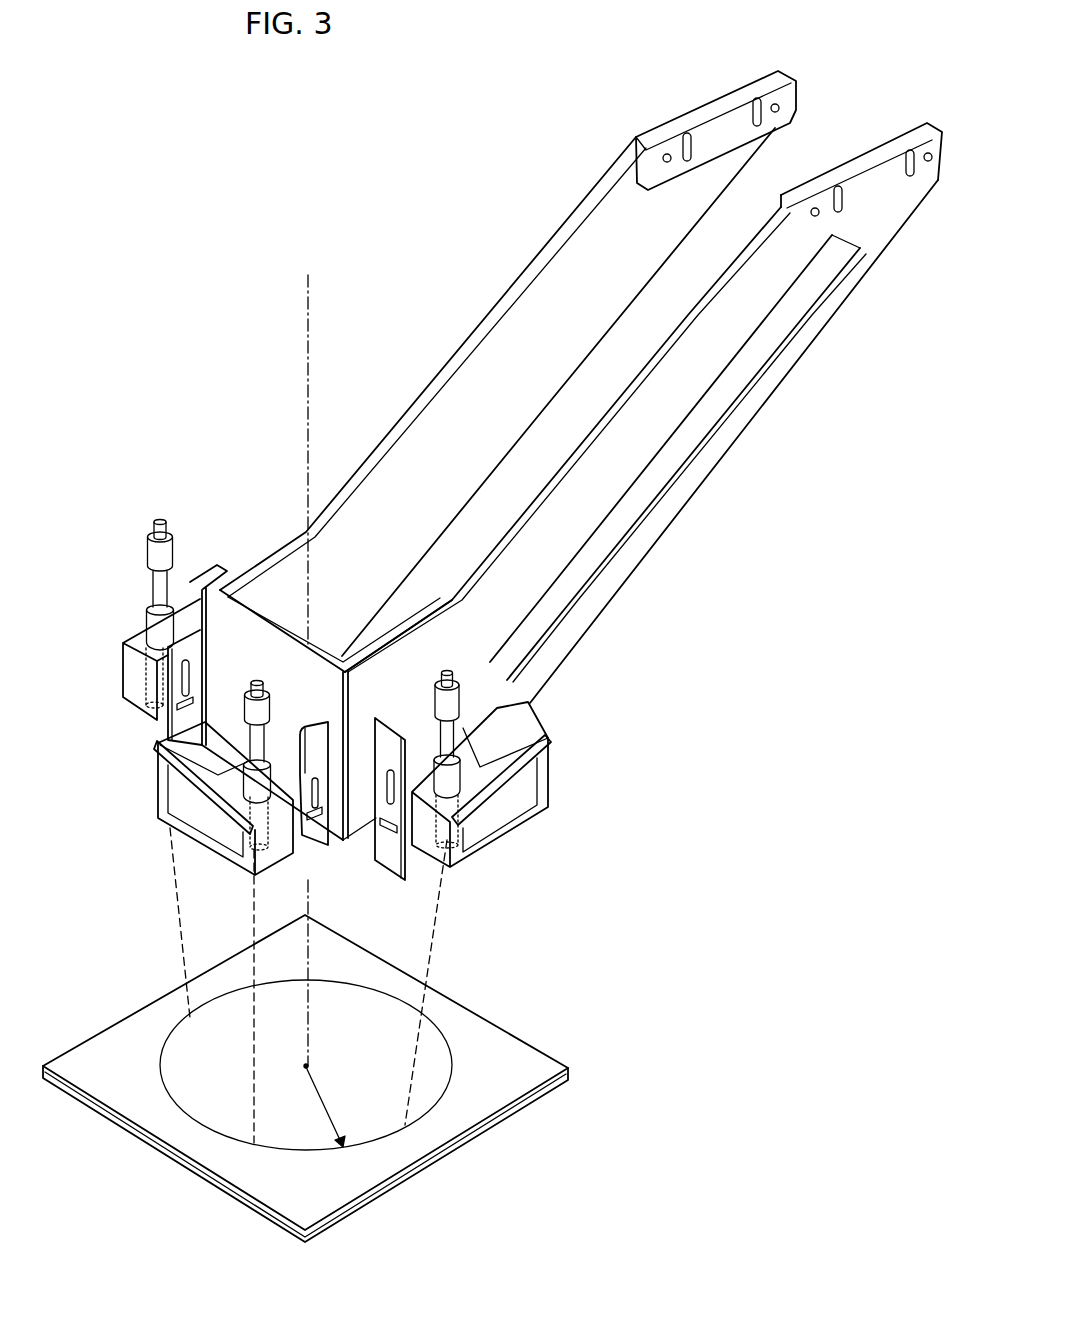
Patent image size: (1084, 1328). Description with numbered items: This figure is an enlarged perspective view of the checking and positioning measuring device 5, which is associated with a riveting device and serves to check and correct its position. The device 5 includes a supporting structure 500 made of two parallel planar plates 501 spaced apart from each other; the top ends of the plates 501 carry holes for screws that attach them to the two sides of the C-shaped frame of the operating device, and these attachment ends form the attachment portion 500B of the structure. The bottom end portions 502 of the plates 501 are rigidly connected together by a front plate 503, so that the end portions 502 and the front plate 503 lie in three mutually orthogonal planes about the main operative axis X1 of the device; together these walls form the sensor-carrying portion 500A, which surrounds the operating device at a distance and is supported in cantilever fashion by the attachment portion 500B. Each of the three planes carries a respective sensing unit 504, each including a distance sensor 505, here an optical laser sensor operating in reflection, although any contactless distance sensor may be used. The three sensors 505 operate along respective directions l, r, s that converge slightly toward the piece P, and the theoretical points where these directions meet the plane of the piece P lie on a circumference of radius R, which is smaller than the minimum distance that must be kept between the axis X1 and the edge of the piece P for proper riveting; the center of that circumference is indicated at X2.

The measuring device 5 is at (428, 293).
The supporting structure 500 is at (515, 240).
The sensor-carrying portion 500A is at (568, 727).
The attachment portion 500B is at (961, 130).
The planar plate 501 is at (422, 433).
The bottom end portion 502 is at (272, 575).
The front plate 503 is at (223, 628).
The sensing unit 504 is at (128, 640).
The distance sensor 505 is at (142, 676).
The main operative axis X1 is at (306, 378).
The center of wafer X2 is at (309, 1029).
The piece P is at (522, 1074).
The radius R is at (327, 1107).
The operating direction r is at (254, 1057).
The operating direction l is at (172, 866).
The operating direction s is at (438, 925).